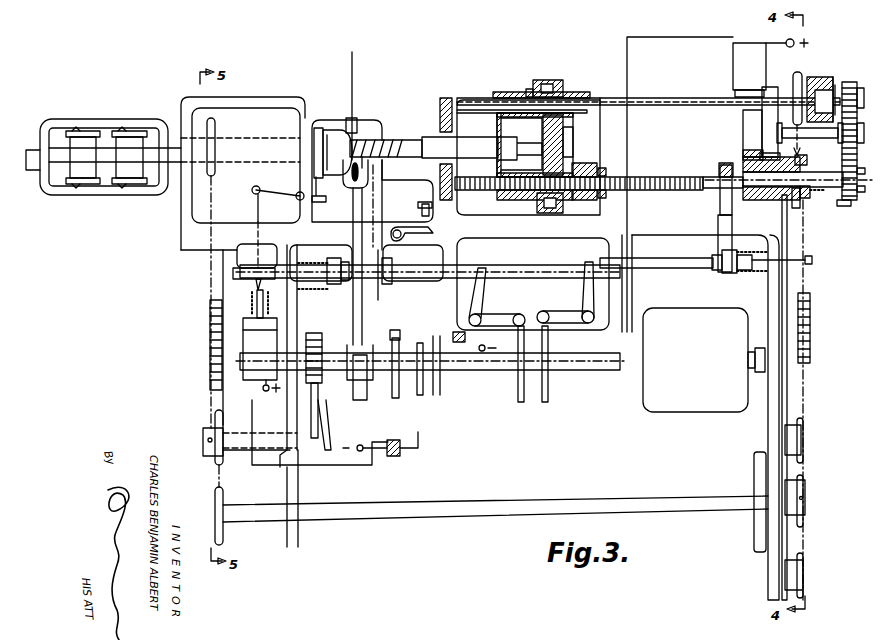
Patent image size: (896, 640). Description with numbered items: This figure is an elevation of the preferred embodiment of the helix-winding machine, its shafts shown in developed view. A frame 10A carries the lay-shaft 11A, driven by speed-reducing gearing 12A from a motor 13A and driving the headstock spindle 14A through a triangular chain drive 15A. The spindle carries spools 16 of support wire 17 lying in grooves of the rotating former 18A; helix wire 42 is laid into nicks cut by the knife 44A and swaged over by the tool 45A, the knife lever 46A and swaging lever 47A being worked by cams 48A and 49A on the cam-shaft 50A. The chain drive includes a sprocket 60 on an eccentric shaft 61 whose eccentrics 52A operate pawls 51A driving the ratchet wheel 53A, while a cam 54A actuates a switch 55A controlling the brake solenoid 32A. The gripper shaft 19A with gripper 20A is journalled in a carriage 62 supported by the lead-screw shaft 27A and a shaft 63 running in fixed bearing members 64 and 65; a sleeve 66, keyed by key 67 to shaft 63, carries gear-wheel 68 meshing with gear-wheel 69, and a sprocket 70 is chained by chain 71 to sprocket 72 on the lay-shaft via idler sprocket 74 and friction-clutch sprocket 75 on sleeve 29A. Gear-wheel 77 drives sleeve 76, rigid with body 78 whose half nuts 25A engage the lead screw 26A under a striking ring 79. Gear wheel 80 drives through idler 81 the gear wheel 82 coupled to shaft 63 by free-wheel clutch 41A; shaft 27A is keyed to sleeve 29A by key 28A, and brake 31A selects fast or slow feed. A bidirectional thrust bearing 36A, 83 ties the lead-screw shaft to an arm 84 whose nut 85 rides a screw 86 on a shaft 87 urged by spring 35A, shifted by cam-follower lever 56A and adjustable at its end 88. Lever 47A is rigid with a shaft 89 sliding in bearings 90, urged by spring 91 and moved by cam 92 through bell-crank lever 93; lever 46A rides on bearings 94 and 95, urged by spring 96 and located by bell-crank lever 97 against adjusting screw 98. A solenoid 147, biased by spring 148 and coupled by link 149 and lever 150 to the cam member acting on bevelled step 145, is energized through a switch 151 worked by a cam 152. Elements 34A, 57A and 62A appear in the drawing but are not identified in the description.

The spools 16 is at (116, 131).
The support wire 17 is at (128, 184).
The frame 10A is at (181, 241).
The headstock spindle 14A is at (278, 130).
The triangular chain drive 15A is at (208, 335).
The lever 150 is at (290, 190).
The link 149 is at (257, 205).
The bevelled step 145 is at (318, 198).
The lever 47A is at (353, 236).
The helix wire 42 is at (354, 72).
The rotating former 18A is at (338, 131).
The knife 44A is at (350, 118).
The swaging tool 45A is at (375, 158).
The cam-follower lever 46A is at (373, 183).
The gripper 20A is at (432, 138).
The adjusting screw 98 is at (418, 208).
The fixed bearing member 64 is at (449, 98).
The gripper shaft 19A is at (497, 128).
The gear-wheel 69 is at (564, 131).
The gear-wheel 77 is at (552, 213).
The half nuts 25A is at (590, 158).
The gear-wheel 68 is at (555, 80).
The carriage 62 is at (530, 89).
The shaft 63 is at (686, 100).
The sleeve 66 is at (577, 92).
The key 67 is at (612, 89).
The sleeve 76 is at (492, 192).
The body 78 is at (606, 168).
The striking ring 79 is at (608, 196).
The lead screw 26A is at (660, 177).
The brake solenoid 32A is at (733, 62).
The fixed bearing member 65 is at (770, 88).
The chain sprocket 70 is at (800, 78).
The free-wheel clutch 41A is at (822, 77).
The gear wheel 82 is at (858, 88).
The brake 31A is at (743, 156).
The friction clutch driving sprocket 75 is at (804, 154).
The key 28A is at (857, 174).
The idler wheel 81 is at (857, 164).
The gear wheel 80 is at (857, 186).
The lead-screw shaft 27A is at (846, 203).
The support 34A is at (815, 205).
The sleeve 29A is at (804, 215).
The bidirectional thrust bearing 36A is at (720, 168).
The thrust bearing 83 is at (719, 177).
The arm 84 is at (718, 224).
The shaft 87 is at (651, 268).
The screw 86 is at (722, 254).
The nut 85 is at (722, 271).
The compression spring 35A is at (760, 271).
The end 88 is at (812, 262).
The speed-reducing gearing 12A is at (768, 428).
The chain 71 is at (810, 308).
The sprocket 72 is at (806, 494).
The idler sprocket 74 is at (805, 576).
The motor 13A is at (704, 360).
The lay-shaft 11A is at (478, 485).
The bearings 90 is at (279, 256).
The shaft 89 is at (415, 278).
The compression spring 96 is at (314, 267).
The bearing 94 is at (335, 284).
The bearing 95 is at (388, 284).
The bell-crank lever 97 is at (402, 250).
The compression spring 91 is at (248, 280).
The compression spring 148 is at (249, 300).
The solenoid 147 is at (255, 375).
The ratchet wheel 53A is at (320, 333).
The pawls 51A is at (318, 410).
The eccentrics 52A is at (331, 447).
The cam 49A is at (355, 390).
The cam 152 is at (395, 328).
The cam 48A is at (397, 376).
The switch-actuating cam 54A is at (424, 392).
The switch 55A is at (448, 328).
The cam-shaft 50A is at (585, 356).
The bell-crank cam-follower lever 93 is at (500, 313).
The cam-follower lever 56A is at (584, 294).
The cam 92 is at (518, 398).
The pin 57A is at (548, 398).
The sprocket 60 is at (205, 428).
The eccentric shaft 61 is at (245, 456).
The terminal 62A is at (351, 433).
The switch 151 is at (404, 452).